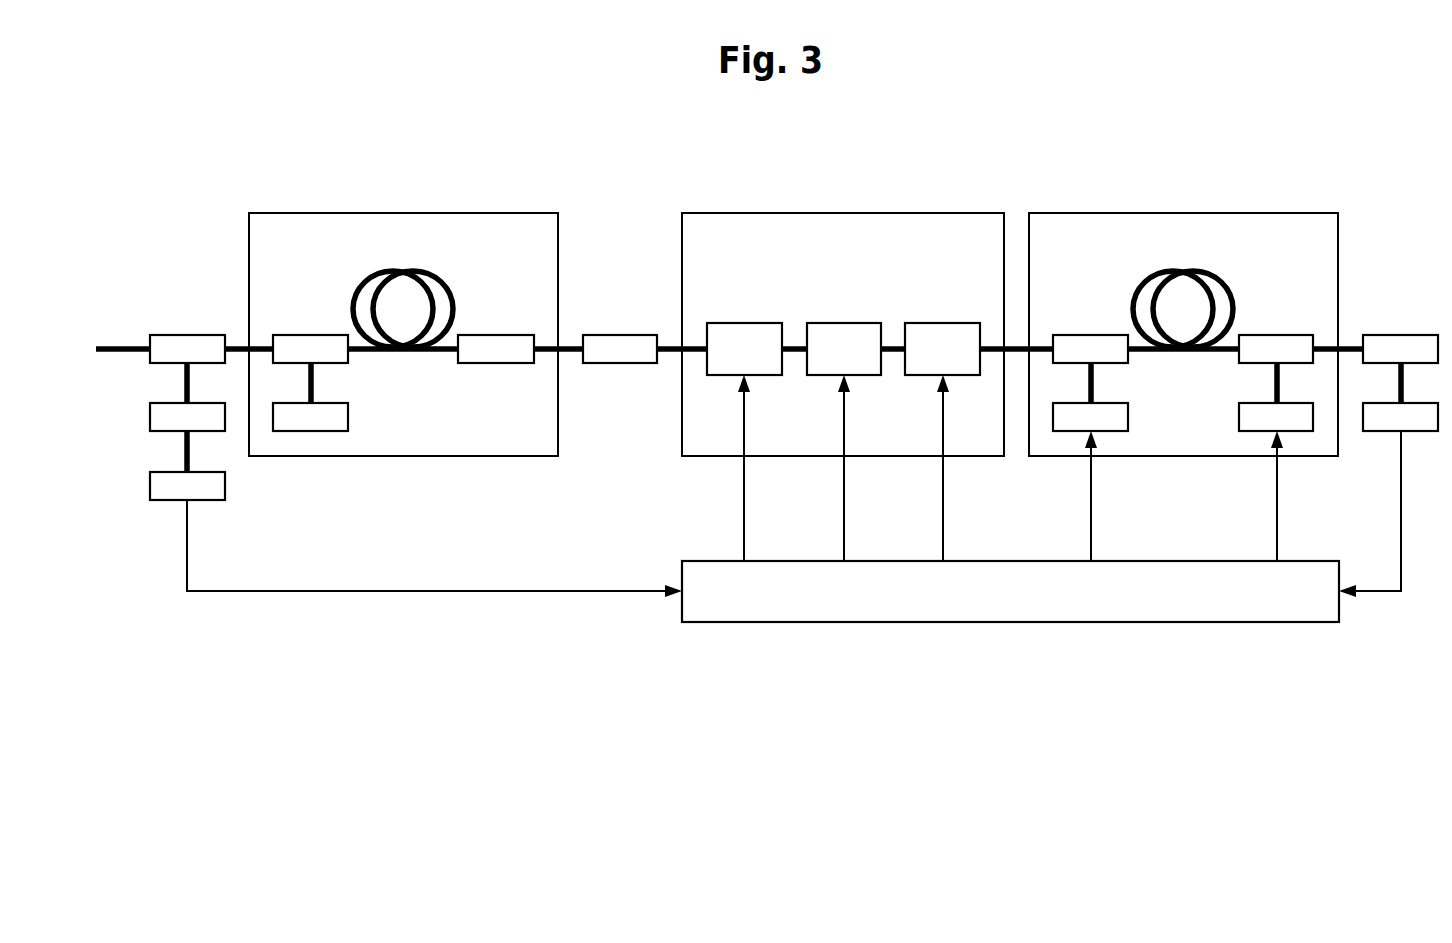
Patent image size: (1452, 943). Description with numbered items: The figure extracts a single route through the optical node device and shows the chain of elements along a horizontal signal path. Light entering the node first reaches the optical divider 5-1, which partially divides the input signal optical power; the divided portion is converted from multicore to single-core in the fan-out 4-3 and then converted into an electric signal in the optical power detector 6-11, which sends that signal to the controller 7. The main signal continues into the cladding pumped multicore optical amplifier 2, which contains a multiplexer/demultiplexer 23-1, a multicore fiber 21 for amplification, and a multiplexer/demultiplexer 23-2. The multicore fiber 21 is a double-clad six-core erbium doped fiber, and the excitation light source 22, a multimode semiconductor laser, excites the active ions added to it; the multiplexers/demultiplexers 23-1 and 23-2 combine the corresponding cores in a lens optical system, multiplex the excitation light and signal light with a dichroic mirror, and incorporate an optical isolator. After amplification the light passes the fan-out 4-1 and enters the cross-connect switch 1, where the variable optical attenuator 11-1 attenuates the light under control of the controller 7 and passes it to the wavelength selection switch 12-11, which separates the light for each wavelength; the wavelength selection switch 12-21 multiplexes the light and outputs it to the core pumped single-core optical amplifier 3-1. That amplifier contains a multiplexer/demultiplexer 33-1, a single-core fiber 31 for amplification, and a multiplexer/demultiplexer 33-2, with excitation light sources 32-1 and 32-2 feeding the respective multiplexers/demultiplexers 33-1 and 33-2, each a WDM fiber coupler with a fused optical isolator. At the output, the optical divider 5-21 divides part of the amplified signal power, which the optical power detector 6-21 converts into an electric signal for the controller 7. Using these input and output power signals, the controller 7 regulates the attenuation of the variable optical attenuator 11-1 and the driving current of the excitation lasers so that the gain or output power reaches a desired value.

The cross-connect switch 1 is at (940, 213).
The cladding pumped multicore optical amplifier 2 is at (483, 213).
The core pumped single-core optical amplifier 3-1 is at (1263, 213).
The fan-out 4-1 is at (620, 335).
The fan-out 4-3 is at (178, 400).
The optical divider 5-1 is at (187, 335).
The optical divider 5-21 is at (1401, 335).
The optical power detector 6-11 is at (178, 470).
The optical power detector 6-21 is at (1386, 433).
The controller 7 is at (1175, 561).
The variable optical attenuator 11-1 is at (744, 323).
The wavelength selection switch 12-11 is at (844, 323).
The wavelength selection switch 12-21 is at (943, 323).
The multicore fiber for amplification 21 is at (402, 270).
The excitation light source 22 is at (333, 401).
The multiplexer/demultiplexer 23-1 is at (310, 335).
The multiplexer/demultiplexer 23-2 is at (495, 335).
The single-core fiber for amplification 31 is at (1182, 270).
The excitation light source 32-1 is at (1128, 415).
The excitation light source 32-2 is at (1270, 402).
The multiplexer/demultiplexer 33-1 is at (1091, 335).
The multiplexer/demultiplexer 33-2 is at (1277, 335).